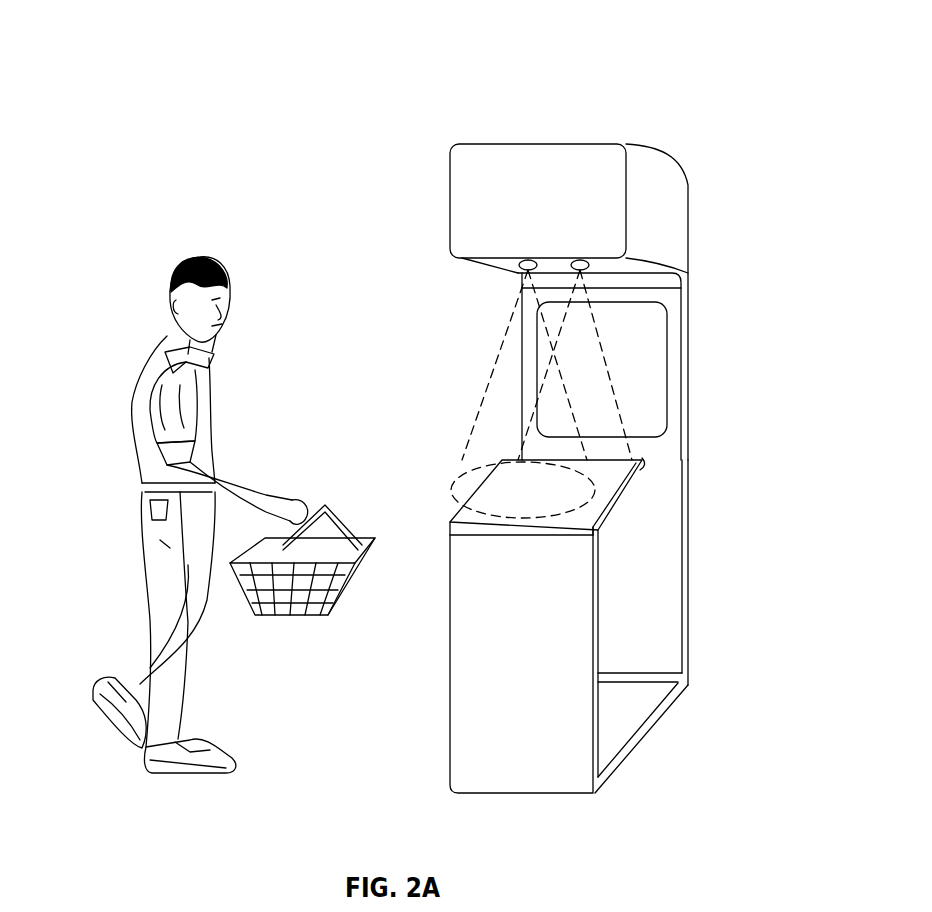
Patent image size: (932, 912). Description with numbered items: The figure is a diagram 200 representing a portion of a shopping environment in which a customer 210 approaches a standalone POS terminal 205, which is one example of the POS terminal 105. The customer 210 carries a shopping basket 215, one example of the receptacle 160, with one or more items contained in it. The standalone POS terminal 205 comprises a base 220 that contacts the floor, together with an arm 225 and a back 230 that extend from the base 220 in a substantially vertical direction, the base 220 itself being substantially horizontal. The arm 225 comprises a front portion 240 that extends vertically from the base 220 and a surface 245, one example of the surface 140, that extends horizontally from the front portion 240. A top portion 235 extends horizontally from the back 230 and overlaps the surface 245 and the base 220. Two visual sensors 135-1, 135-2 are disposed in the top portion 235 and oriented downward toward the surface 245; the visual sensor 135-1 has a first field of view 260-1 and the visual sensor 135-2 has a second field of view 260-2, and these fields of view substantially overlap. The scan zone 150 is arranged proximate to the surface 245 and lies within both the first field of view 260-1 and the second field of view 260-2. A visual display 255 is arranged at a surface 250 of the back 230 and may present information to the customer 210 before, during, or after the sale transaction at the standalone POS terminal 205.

The diagram 200 is at (668, 62).
The standalone POS terminal 205 is at (668, 138).
The POS terminal 105 is at (570, 302).
The customer 210 is at (183, 193).
The shopping basket 215 is at (340, 485).
The receptacle 160 is at (302, 560).
The base 220 is at (642, 798).
The arm 225 is at (400, 668).
The back 230 is at (775, 378).
The top portion 235 is at (672, 220).
The front portion 240 is at (465, 715).
The surface 245 is at (640, 465).
The surface 140 is at (547, 496).
The surface 250 is at (655, 446).
The visual display 255 is at (670, 343).
The visual sensor 135-1 is at (522, 272).
The visual sensor 135-2 is at (590, 265).
The first field of view 260-1 is at (498, 336).
The second field of view 260-2 is at (545, 340).
The scan zone 150 is at (538, 488).